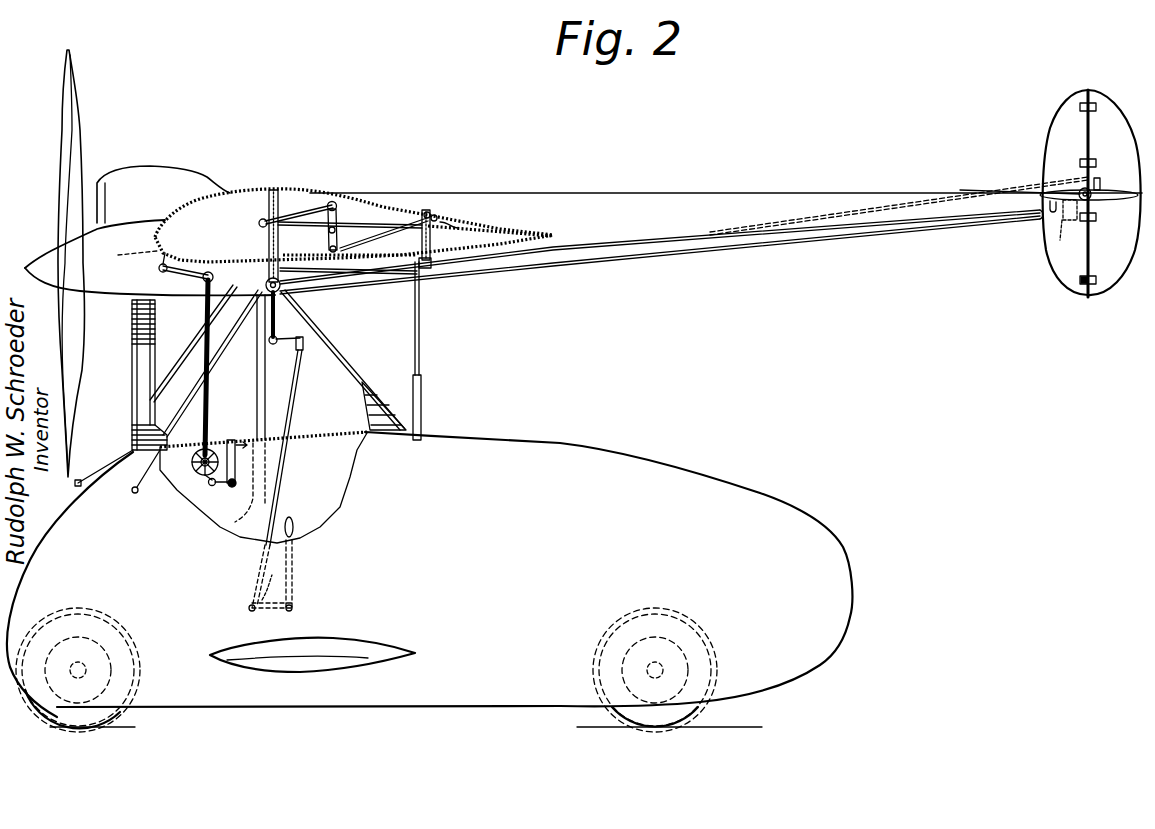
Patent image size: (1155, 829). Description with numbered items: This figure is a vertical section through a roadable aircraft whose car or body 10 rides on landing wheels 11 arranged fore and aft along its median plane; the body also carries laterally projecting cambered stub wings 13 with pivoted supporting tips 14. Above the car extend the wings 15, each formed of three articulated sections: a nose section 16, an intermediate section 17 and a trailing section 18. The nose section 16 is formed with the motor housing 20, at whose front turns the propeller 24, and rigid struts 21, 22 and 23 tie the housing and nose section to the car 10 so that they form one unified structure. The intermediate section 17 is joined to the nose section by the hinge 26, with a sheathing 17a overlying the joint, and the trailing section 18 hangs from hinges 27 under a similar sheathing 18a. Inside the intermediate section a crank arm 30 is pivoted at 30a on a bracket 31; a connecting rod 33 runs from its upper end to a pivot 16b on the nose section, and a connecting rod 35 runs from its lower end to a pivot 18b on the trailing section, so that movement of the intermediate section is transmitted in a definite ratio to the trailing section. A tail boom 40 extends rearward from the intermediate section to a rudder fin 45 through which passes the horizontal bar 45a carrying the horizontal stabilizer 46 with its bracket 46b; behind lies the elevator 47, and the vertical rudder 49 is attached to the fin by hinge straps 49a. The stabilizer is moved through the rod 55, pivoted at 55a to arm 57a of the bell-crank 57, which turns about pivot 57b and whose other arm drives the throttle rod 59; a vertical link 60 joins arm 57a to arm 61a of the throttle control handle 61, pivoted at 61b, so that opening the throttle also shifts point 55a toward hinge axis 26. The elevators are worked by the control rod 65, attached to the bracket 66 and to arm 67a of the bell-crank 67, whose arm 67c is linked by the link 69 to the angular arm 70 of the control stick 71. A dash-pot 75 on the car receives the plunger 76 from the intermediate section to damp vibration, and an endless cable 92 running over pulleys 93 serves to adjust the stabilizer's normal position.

The car or body 10 is at (582, 458).
The landing wheels 11 is at (118, 708).
The cambered stub wings 13 is at (382, 657).
The pivoted supporting tips 14 is at (300, 667).
The wings 15 is at (314, 183).
The nose section 16 is at (228, 193).
The pivotal connection 16b is at (262, 232).
The intermediate section 17 is at (395, 210).
The sheathing 17a is at (277, 188).
The trailing section 18 is at (505, 222).
The sheathing 18a is at (431, 210).
The pivotal connection point 18b is at (464, 210).
The motor block or housing 20 is at (50, 277).
The vertical strut 21 is at (132, 345).
The rigid strut 22 is at (262, 377).
The rigid strut 23 is at (370, 385).
The rotatable propeller 24 is at (75, 85).
The hinge 26 is at (348, 267).
The hinge 27 is at (428, 268).
The crank arm 30 is at (335, 202).
The pivot 30a is at (328, 232).
The bracket 31 is at (337, 235).
The connecting rod 33 is at (293, 210).
The connecting rod 35 is at (382, 225).
The tail boom 40 is at (778, 192).
The rudder fin 45 is at (1050, 125).
The horizontal bar 45a is at (1080, 190).
The horizontal stabilizer 46 is at (1048, 203).
The crank arm / bracket 46b is at (1072, 229).
The elevator 47 is at (1118, 197).
The vertical rudder 49 is at (1108, 102).
The hinge straps 49a is at (1080, 293).
The rod 55 is at (812, 250).
The pivotal connection 55a is at (300, 293).
The bell-crank 57 is at (170, 262).
The bell-crank arm 57a is at (204, 283).
The bell-crank pivot 57b is at (158, 268).
The rod 59 is at (127, 253).
The vertical link 60 is at (209, 312).
The throttle control handle 61 is at (225, 438).
The arm 61a is at (210, 486).
The pivot 61b is at (231, 487).
The control rod 65 is at (1015, 187).
The bracket / crank arm 66 is at (1098, 178).
The bell-crank 67 is at (268, 342).
The bell-crank arm 67a is at (290, 313).
The bell-crank arm 67c is at (298, 348).
The link 69 is at (288, 467).
The angularly disposed arm 70 is at (262, 600).
The control stick 71 is at (292, 522).
The dash-pot 75 is at (421, 385).
The plunger 76 is at (420, 340).
The endless cable 92 is at (210, 410).
The pulleys 93 is at (259, 223).